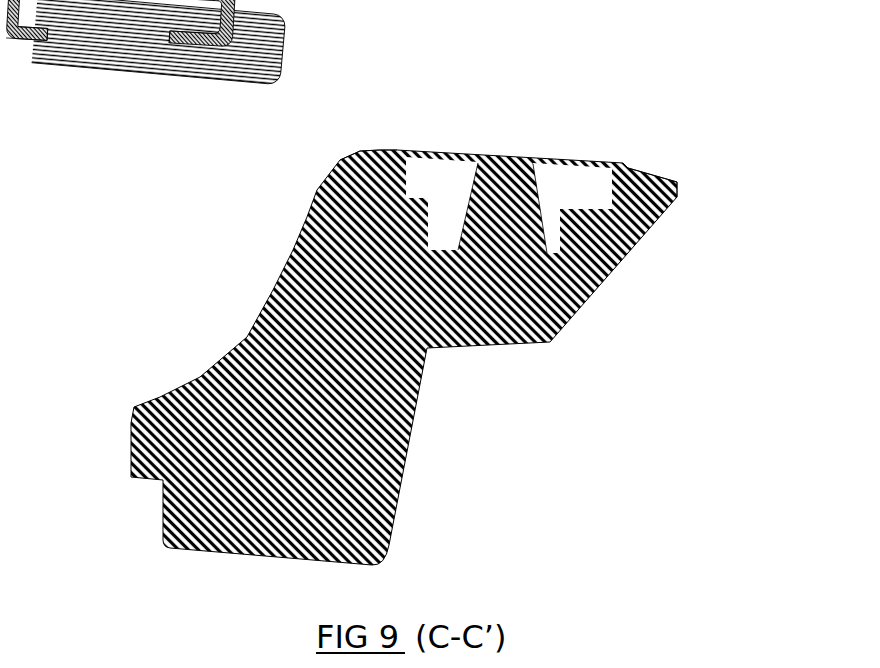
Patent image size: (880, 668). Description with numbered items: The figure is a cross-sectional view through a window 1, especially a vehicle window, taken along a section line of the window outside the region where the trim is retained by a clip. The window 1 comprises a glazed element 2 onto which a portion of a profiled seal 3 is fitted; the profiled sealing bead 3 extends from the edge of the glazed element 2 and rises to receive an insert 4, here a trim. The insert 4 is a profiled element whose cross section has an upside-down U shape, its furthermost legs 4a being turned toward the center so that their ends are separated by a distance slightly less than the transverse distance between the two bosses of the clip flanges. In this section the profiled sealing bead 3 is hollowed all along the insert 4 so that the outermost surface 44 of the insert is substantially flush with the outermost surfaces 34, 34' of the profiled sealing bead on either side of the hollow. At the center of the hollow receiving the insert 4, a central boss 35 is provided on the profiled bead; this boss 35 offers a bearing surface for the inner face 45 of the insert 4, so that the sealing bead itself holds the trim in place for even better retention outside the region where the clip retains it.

The window 1 is at (385, 288).
The glazed element 2 is at (153, 487).
The profiled seal 3 is at (262, 333).
The insert 4 is at (617, 163).
The furthermost legs 4a is at (397, 205).
The outermost surface of the profiled sealing bead 34 is at (334, 124).
The outermost surface of the profiled sealing bead 34' is at (696, 159).
The central boss 35 is at (499, 232).
The outermost surface of the insert 44 is at (545, 157).
The inner face of the insert 45 is at (438, 160).